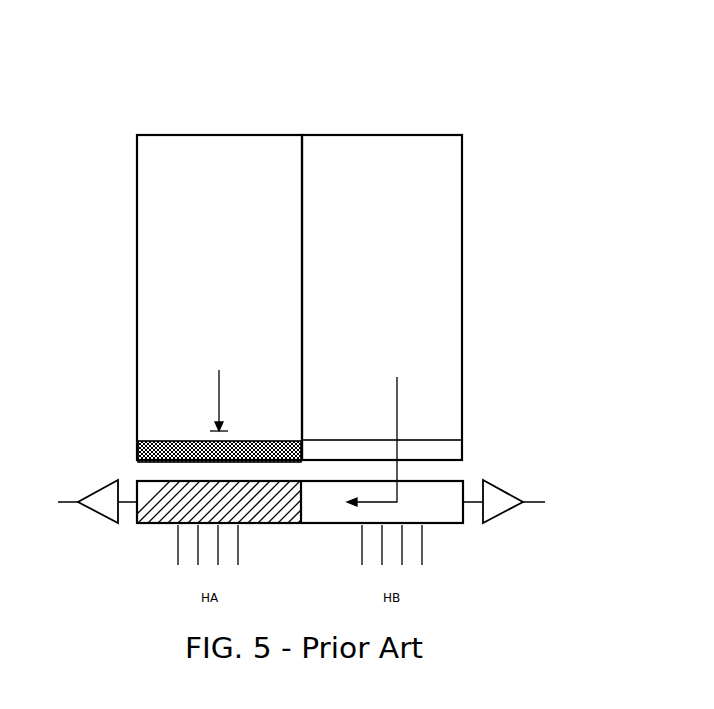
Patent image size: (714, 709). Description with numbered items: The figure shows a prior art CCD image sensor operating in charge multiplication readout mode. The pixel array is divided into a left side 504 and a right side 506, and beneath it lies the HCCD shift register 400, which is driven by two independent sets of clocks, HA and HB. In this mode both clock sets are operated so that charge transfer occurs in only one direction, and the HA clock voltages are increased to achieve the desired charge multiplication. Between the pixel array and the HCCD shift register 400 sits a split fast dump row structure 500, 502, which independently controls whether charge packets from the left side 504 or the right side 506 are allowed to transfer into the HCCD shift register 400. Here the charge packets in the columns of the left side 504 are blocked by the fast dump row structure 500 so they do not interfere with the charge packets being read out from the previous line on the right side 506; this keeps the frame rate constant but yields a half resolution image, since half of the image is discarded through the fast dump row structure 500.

The HCCD shift register 400 is at (315, 524).
The split fast dump row structure 500 is at (138, 457).
The split fast dump row structure 502 is at (448, 450).
The left side of the pixel array 504 is at (132, 104).
The right side of the pixel array 506 is at (463, 106).